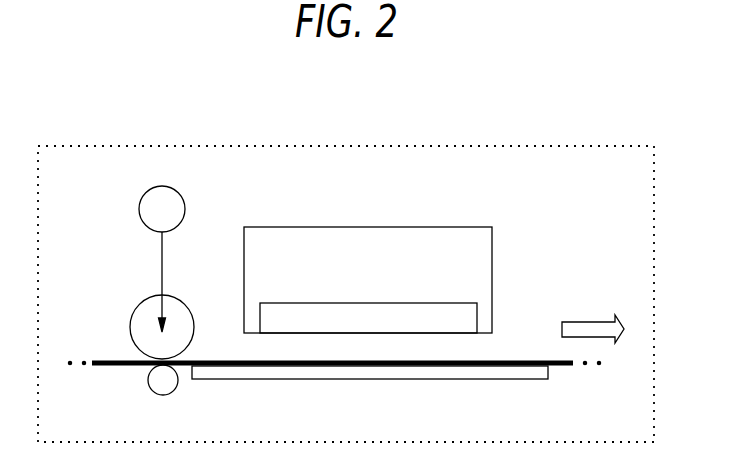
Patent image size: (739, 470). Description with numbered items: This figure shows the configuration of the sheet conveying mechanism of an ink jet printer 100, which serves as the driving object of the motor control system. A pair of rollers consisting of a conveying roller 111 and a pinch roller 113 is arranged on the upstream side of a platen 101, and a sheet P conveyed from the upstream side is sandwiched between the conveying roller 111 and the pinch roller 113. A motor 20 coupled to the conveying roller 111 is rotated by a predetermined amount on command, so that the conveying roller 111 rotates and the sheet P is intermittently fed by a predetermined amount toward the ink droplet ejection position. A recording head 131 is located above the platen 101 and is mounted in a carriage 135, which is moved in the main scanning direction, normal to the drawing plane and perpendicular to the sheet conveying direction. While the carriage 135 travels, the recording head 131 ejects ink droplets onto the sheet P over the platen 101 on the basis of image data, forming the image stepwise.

The ink jet printer 100 is at (565, 146).
The motor 20 is at (167, 187).
The conveying roller 111 is at (144, 315).
The pinch roller 113 is at (154, 385).
The sheet P is at (477, 358).
The platen 101 is at (373, 381).
The carriage 135 is at (410, 227).
The recording head 131 is at (375, 303).